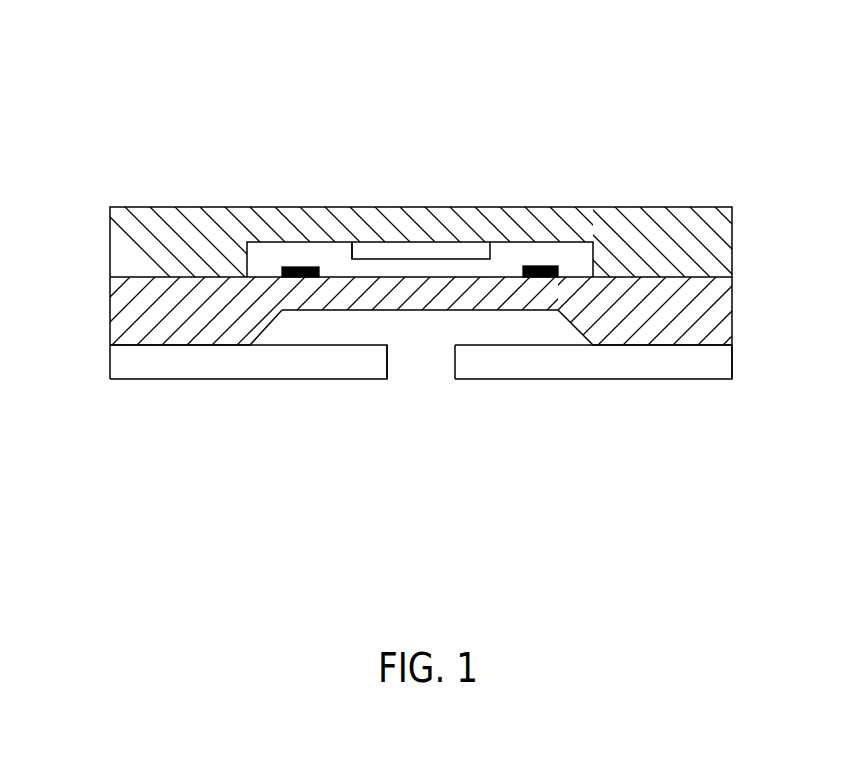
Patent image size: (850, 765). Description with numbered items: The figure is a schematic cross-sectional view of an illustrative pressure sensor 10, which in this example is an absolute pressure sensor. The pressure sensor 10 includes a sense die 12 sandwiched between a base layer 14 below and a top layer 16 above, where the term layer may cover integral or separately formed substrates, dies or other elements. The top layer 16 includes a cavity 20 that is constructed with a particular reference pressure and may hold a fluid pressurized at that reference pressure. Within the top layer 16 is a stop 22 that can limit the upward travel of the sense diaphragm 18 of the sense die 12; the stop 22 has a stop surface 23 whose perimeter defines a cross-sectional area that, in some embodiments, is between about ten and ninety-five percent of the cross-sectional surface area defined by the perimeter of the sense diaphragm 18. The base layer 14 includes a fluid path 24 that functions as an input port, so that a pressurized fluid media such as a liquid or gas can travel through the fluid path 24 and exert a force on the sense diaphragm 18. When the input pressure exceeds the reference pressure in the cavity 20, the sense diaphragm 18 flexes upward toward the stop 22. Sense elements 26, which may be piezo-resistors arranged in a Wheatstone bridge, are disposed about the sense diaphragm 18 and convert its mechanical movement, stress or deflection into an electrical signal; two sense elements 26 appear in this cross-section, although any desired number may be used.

The pressure sensor 10 is at (279, 95).
The sense die 12 is at (727, 307).
The base layer 14 is at (725, 362).
The top layer 16 is at (727, 243).
The sense diaphragm 18 is at (333, 285).
The cavity 20 is at (567, 253).
The stop 22 is at (470, 250).
The stop surface 23 is at (360, 257).
The fluid path 24 is at (418, 367).
The sense elements 26 is at (300, 277).